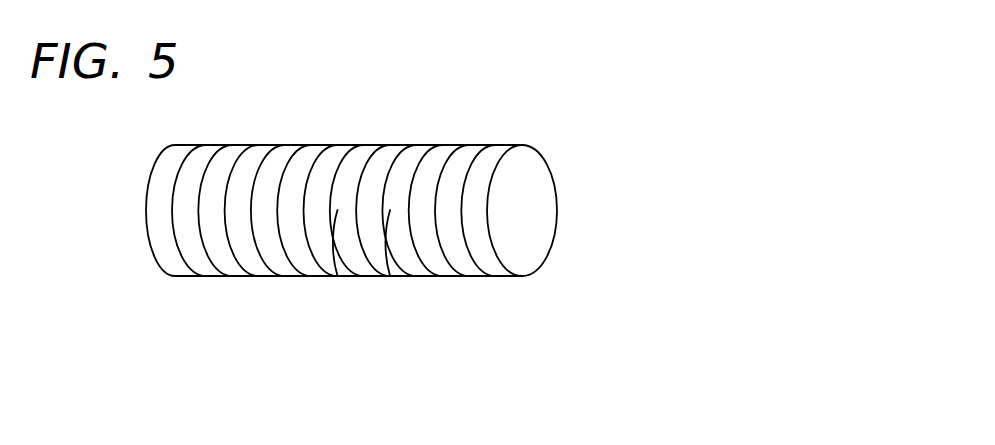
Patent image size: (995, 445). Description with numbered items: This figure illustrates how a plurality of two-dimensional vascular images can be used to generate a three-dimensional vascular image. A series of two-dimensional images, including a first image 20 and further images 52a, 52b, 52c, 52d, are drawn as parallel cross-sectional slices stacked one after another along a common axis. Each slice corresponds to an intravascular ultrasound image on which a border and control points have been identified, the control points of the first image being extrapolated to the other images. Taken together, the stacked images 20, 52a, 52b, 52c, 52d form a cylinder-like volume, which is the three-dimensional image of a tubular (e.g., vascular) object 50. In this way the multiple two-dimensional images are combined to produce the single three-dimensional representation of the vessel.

The 2D image 20 is at (327, 135).
The tubular object 50 is at (570, 211).
The 2D image 52a is at (428, 138).
The 2D image 52b is at (400, 288).
The 2D image 52c is at (380, 138).
The 2D image 52d is at (350, 288).